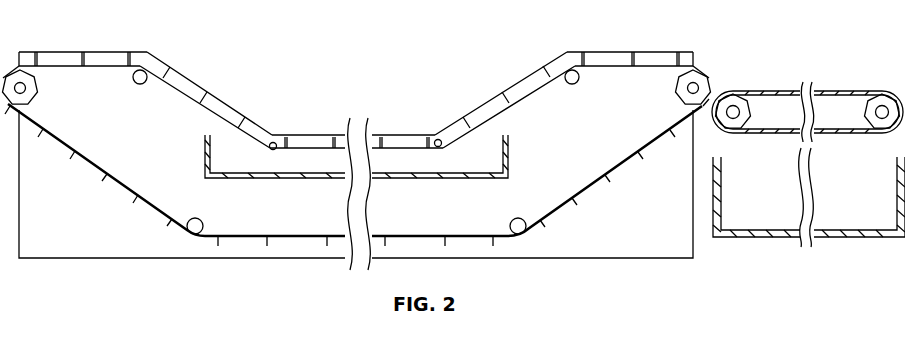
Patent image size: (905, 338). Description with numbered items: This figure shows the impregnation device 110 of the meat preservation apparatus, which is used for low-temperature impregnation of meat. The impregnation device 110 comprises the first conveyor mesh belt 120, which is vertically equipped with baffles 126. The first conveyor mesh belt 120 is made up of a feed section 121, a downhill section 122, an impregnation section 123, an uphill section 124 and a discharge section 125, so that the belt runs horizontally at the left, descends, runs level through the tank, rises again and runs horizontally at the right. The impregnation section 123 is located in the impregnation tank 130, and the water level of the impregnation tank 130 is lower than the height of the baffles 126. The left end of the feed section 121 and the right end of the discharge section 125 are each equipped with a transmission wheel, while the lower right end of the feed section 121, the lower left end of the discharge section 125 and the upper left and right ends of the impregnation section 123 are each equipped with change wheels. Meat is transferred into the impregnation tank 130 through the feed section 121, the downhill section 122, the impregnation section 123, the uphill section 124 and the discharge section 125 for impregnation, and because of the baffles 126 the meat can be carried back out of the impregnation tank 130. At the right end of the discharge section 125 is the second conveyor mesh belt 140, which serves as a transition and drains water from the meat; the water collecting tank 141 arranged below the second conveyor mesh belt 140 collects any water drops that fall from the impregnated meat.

The impregnation device 110 is at (95, 230).
The first conveyor mesh belt 120 is at (97, 170).
The feed section 121 is at (100, 66).
The downhill section 122 is at (202, 87).
The impregnation section 123 is at (300, 146).
The uphill section 124 is at (482, 105).
The discharge section 125 is at (590, 65).
The baffles 126 is at (38, 62).
The impregnation tank 130 is at (205, 163).
The second conveyor mesh belt 140 is at (770, 92).
The water collecting tank 141 is at (847, 235).